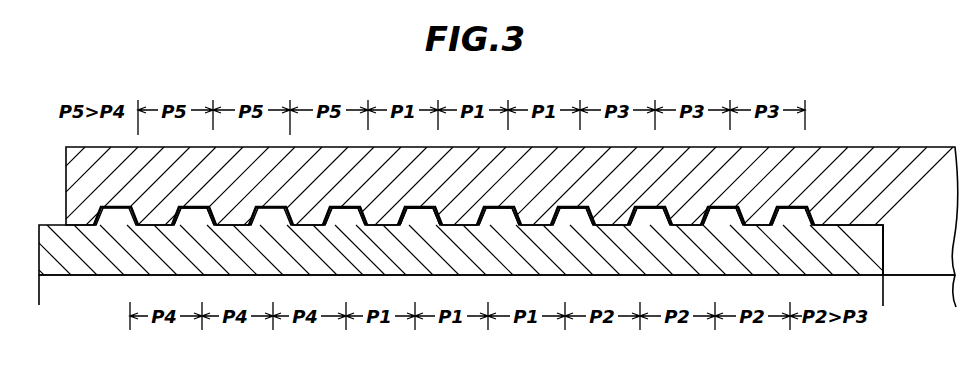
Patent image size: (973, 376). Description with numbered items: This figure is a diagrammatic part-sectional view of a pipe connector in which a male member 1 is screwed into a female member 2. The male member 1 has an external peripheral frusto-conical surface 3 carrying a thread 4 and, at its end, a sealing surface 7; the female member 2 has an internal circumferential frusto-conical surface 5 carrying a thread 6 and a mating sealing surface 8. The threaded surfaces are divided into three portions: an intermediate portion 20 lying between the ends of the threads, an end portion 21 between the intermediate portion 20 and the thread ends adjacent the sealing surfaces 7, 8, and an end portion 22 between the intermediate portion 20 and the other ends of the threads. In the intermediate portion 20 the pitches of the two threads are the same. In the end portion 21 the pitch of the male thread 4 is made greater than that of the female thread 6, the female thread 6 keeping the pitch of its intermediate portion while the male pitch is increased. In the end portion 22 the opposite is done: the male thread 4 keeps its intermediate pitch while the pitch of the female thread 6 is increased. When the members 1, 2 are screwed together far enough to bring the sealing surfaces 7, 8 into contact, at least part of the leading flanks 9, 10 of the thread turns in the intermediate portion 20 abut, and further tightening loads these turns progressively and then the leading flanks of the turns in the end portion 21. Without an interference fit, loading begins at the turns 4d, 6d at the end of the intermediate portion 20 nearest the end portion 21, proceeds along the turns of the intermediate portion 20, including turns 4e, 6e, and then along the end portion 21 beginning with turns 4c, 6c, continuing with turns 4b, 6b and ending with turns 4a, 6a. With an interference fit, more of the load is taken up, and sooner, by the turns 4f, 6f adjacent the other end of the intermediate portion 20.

The male member 1 is at (582, 260).
The female member 2 is at (174, 189).
The external peripheral frusto-conical surface 3 is at (312, 210).
The thread of the male member 4 is at (190, 212).
The thread turn of male member 4a is at (790, 232).
The thread turn of male member 4b is at (700, 214).
The thread turn of male member 4c is at (633, 214).
The thread turn of male member 4d is at (550, 214).
The thread turn of male member 4e is at (484, 214).
The thread turn of male member 4f is at (417, 214).
The internal circumferential frusto-conical surface 5 is at (363, 214).
The thread of the female member 6 is at (240, 220).
The thread turn of female member 6a is at (752, 212).
The thread turn of female member 6b is at (665, 212).
The thread turn of female member 6c is at (597, 212).
The thread turn of female member 6d is at (523, 212).
The thread turn of female member 6e is at (457, 210).
The thread turn of female member 6f is at (372, 212).
The sealing surface of male member 7 is at (890, 270).
The sealing surface of female member 8 is at (885, 248).
The leading flank 9 is at (396, 216).
The leading flank 10 is at (400, 216).
The intermediate portion 20 is at (580, 79).
The end portion 21 is at (580, 69).
The end portion 22 is at (368, 79).